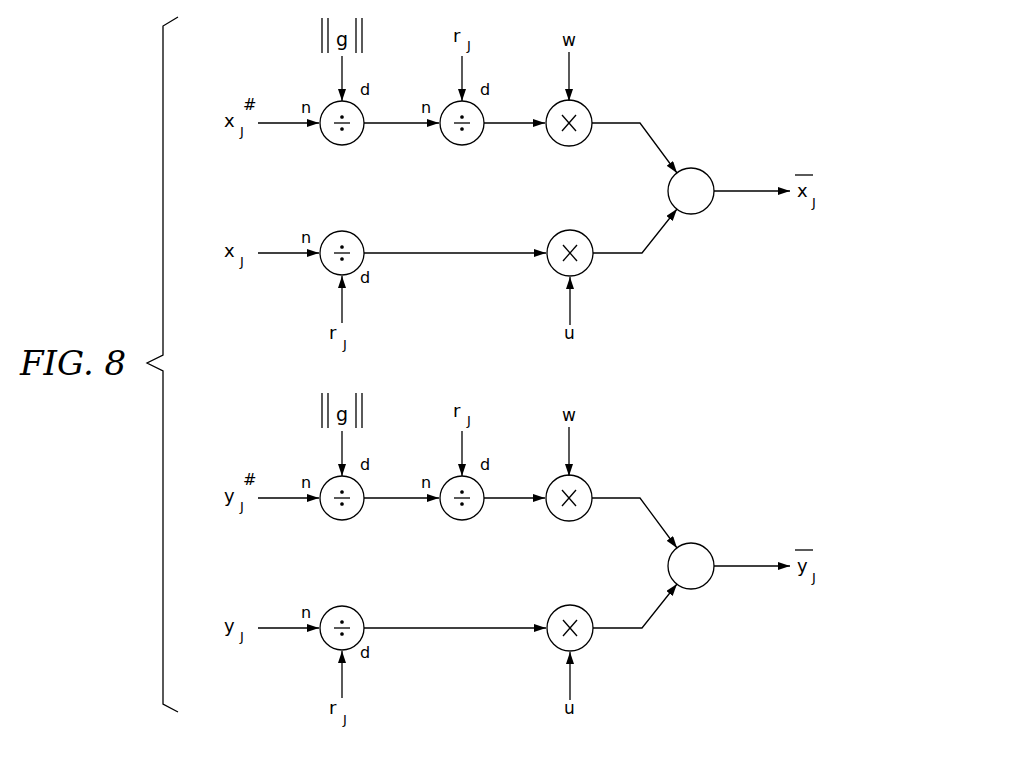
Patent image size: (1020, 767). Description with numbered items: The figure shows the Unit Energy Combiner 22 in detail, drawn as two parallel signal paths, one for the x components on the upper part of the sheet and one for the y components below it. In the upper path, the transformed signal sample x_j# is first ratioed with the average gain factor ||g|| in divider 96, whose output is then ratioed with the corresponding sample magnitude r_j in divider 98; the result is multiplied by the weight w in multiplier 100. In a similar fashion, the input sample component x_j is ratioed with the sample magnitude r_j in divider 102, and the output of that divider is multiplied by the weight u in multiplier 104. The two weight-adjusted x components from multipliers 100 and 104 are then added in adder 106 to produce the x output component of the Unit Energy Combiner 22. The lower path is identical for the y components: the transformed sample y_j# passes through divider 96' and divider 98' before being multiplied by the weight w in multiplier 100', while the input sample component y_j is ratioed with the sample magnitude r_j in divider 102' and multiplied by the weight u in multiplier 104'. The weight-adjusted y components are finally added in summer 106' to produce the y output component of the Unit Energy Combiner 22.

The divider 96 is at (359, 133).
The divider 98 is at (479, 133).
The multiplier 100 is at (593, 133).
The divider 102 is at (364, 245).
The multiplier 104 is at (594, 263).
The adder 106 is at (714, 200).
The divider 96' is at (361, 508).
The divider 98' is at (481, 508).
The multiplier 100' is at (595, 508).
The divider 102' is at (367, 620).
The multiplier 104' is at (596, 638).
The summer 106' is at (717, 575).
The Unit Energy Combiner 22 is at (728, 429).